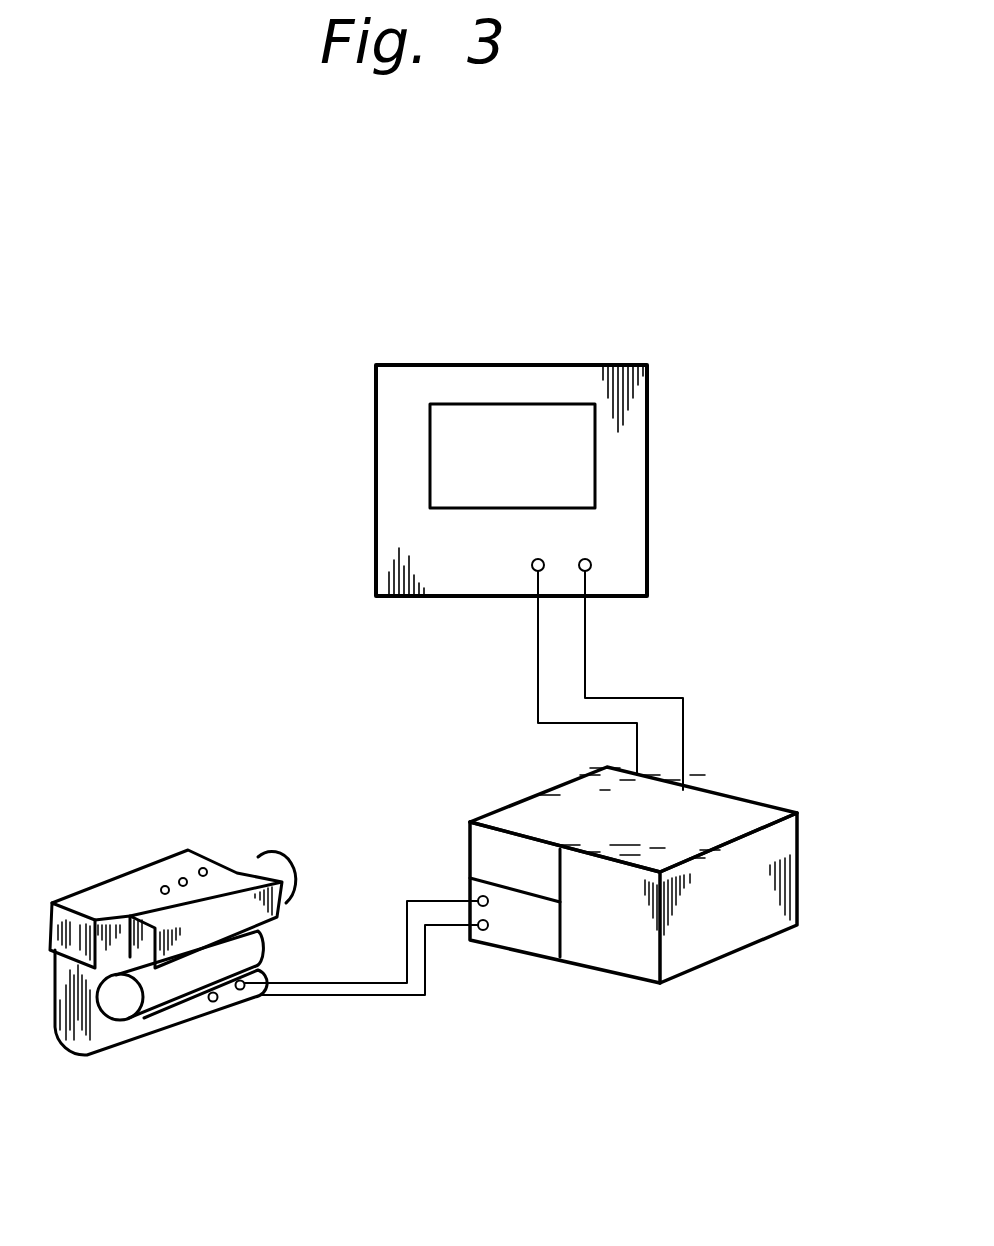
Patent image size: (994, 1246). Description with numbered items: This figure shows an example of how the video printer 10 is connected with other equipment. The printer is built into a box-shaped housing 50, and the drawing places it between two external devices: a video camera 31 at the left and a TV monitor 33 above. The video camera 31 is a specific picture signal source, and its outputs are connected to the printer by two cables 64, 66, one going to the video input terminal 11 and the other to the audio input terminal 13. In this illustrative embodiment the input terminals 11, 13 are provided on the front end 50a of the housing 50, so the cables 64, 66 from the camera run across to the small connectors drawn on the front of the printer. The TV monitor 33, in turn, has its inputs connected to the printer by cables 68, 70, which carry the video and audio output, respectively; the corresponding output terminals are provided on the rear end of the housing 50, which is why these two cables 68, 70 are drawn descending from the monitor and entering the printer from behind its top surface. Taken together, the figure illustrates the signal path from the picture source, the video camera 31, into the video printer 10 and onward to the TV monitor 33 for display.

The video printer 10 is at (816, 780).
The video input terminal 11 is at (480, 936).
The audio input terminal 13 is at (489, 904).
The video camera 31 is at (95, 877).
The TV monitor 33 is at (647, 463).
The housing 50 is at (728, 936).
The front end of the housing 50a is at (611, 955).
The cable 64 is at (355, 997).
The cable 66 is at (426, 900).
The cable 68 is at (685, 715).
The cable 70 is at (636, 742).